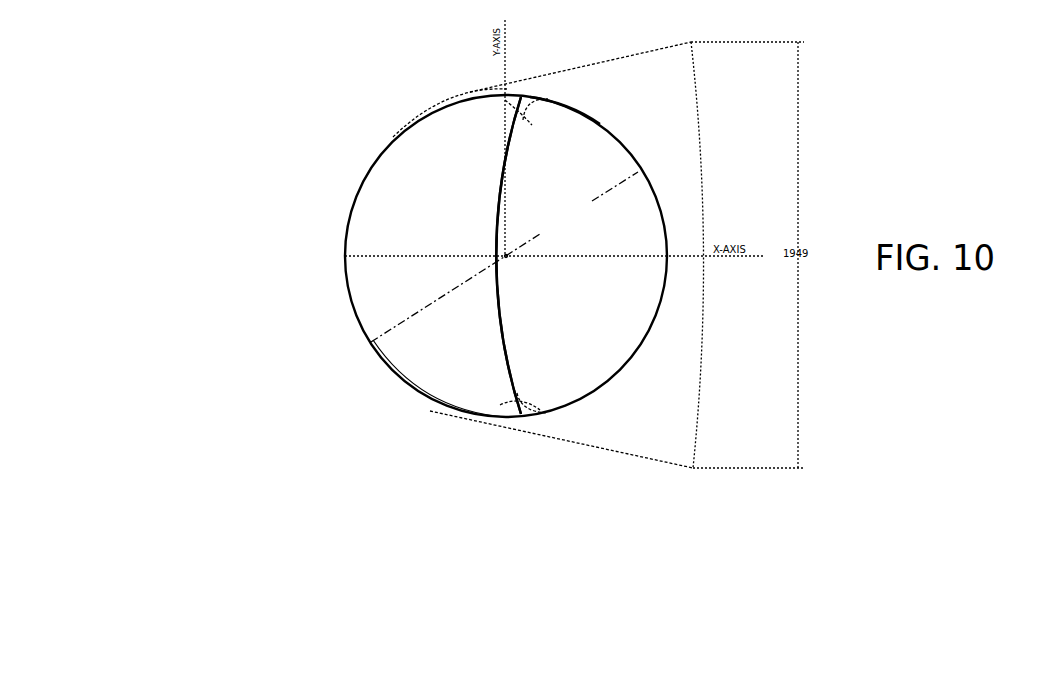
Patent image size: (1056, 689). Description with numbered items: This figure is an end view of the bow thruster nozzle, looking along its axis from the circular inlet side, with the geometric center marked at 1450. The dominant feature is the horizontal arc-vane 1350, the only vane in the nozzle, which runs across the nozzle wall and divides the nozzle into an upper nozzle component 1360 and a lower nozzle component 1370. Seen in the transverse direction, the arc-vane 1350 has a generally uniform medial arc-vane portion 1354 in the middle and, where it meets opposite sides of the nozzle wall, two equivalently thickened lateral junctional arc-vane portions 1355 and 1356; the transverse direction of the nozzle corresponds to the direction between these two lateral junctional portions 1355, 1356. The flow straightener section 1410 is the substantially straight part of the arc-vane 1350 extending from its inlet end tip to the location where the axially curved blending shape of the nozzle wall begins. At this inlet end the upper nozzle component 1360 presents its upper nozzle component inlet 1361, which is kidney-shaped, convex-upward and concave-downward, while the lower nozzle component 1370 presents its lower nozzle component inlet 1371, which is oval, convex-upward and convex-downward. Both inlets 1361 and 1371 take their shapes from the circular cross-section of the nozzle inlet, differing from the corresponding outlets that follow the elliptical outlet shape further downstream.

The horizontal arc-vane 1350 is at (494, 242).
The medial arc-vane portion 1354 is at (493, 240).
The lateral junctional arc-vane portion 1355 is at (520, 405).
The lateral junctional arc-vane portion 1356 is at (517, 102).
The upper nozzle component 1360 is at (437, 150).
The upper nozzle component inlet 1361 is at (403, 253).
The lower nozzle component 1370 is at (561, 255).
The lower nozzle component inlet 1371 is at (664, 255).
The flow straightener section 1410 is at (552, 97).
The center point 1450 is at (542, 237).